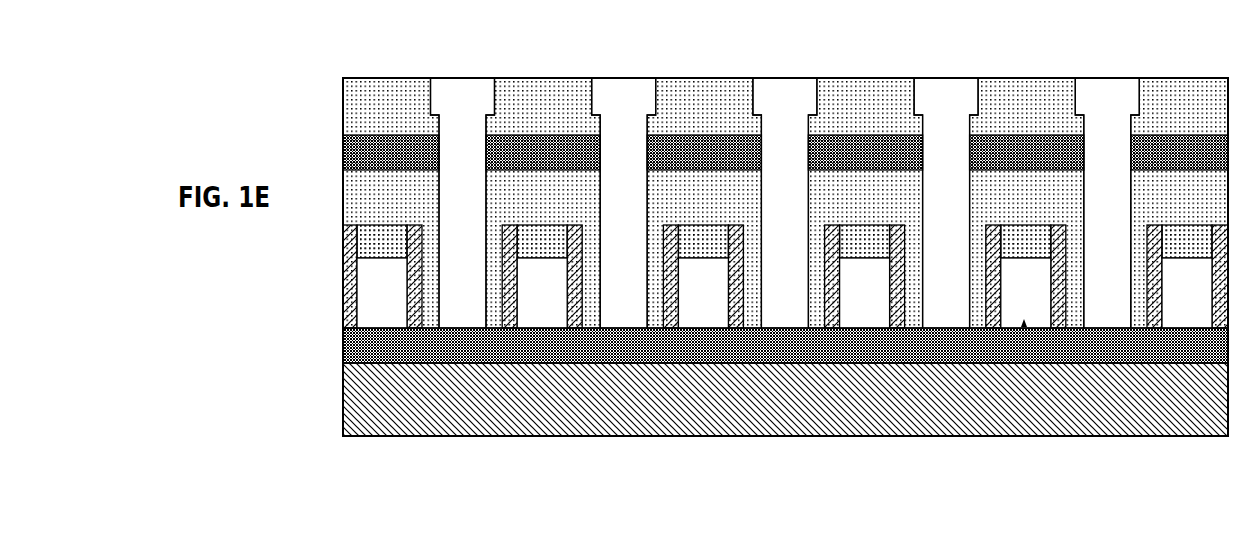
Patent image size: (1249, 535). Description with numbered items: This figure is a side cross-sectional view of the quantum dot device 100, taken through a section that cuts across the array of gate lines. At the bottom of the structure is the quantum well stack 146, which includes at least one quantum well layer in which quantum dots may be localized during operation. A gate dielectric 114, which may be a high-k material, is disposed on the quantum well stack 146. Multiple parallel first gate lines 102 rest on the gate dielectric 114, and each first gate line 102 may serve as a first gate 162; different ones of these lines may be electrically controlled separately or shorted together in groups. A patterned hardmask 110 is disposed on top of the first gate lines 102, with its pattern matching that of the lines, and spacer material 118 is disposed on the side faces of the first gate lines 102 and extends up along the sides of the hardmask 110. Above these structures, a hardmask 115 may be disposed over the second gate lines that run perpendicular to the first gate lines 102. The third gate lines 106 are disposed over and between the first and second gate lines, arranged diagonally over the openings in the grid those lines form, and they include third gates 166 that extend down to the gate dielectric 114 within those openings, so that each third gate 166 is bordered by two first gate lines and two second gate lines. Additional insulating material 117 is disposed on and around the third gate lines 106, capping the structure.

The quantum dot device 100 is at (318, 86).
The insulating material 117 is at (377, 112).
The hardmask 115 is at (377, 163).
The third gate lines 106 is at (476, 214).
The spacer material 118 is at (341, 282).
The patterned hardmask 110 is at (395, 250).
The first gate lines 102 is at (396, 305).
The gate dielectric 114 is at (798, 358).
The quantum well stack 146 is at (798, 411).
The third gates 166 is at (341, 380).
The first gate 162 is at (1052, 437).